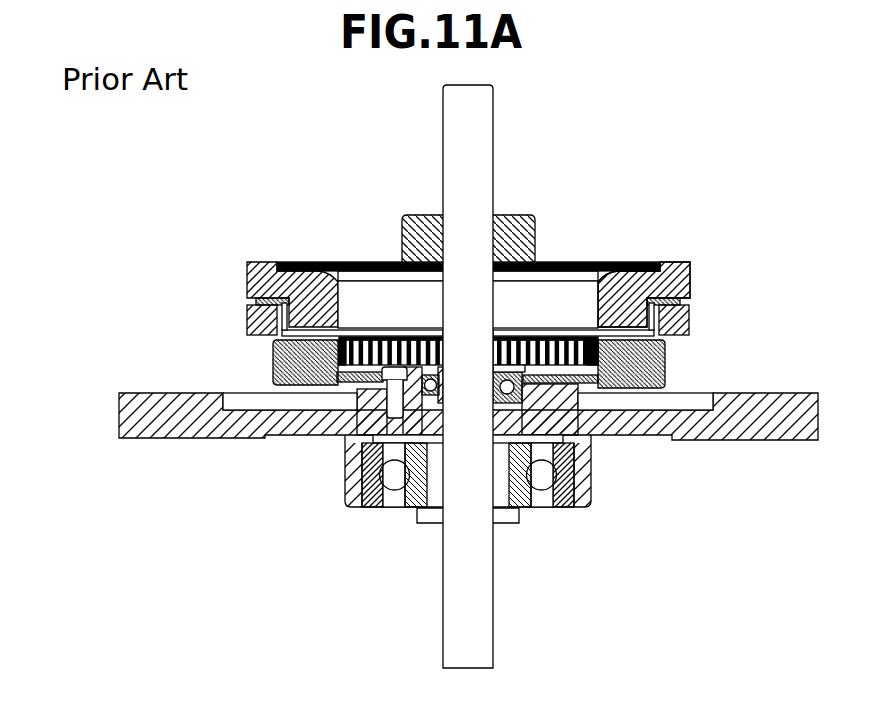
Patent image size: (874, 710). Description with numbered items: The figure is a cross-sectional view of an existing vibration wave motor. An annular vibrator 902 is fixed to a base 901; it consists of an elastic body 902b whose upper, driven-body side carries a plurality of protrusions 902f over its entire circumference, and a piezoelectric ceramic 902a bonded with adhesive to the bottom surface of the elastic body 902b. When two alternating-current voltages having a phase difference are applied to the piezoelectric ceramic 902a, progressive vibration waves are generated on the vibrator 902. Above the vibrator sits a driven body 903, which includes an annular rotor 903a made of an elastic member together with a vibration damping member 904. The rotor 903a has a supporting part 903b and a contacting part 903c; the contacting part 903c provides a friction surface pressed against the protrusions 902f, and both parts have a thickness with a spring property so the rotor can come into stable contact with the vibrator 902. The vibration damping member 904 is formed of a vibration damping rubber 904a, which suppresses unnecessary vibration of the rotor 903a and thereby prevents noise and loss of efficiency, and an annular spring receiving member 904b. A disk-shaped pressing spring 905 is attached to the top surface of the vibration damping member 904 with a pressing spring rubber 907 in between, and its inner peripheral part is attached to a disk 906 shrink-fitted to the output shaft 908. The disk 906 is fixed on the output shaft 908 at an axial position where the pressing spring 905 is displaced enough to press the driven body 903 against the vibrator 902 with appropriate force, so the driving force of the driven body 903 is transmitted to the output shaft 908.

The base 901 is at (766, 430).
The vibrator 902 is at (538, 360).
The piezoelectric ceramic 902a is at (650, 401).
The elastic body 902b is at (645, 362).
The protrusions 902f is at (598, 353).
The driven body 903 is at (350, 293).
The rotor 903a is at (247, 315).
The supporting part 903b is at (283, 333).
The contacting part 903c is at (236, 362).
The vibration damping member 904 is at (382, 264).
The vibration damping rubber 904a is at (247, 300).
The spring receiving member 904b is at (247, 265).
The pressing spring 905 is at (633, 262).
The disk 906 is at (508, 215).
The pressing spring rubber 907 is at (658, 262).
The output shaft 908 is at (478, 108).